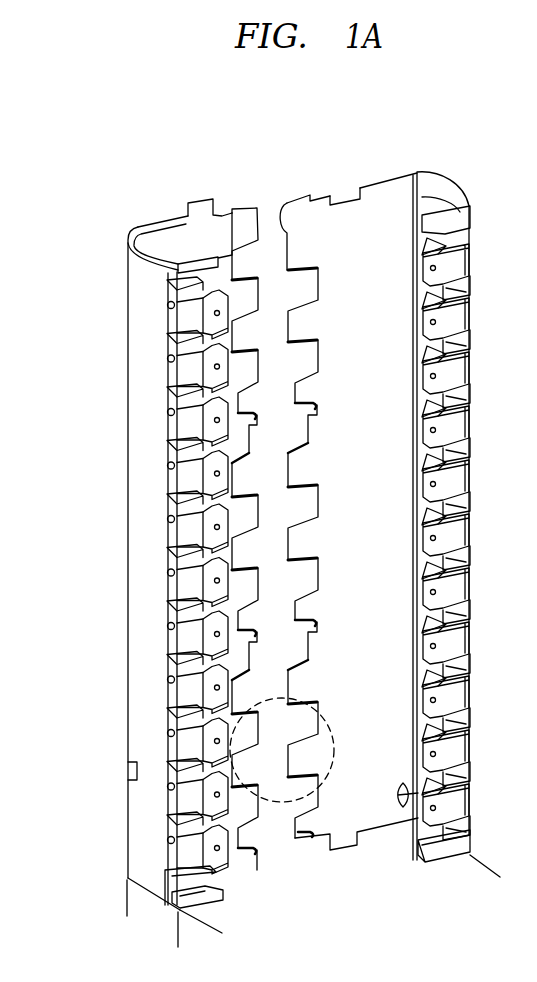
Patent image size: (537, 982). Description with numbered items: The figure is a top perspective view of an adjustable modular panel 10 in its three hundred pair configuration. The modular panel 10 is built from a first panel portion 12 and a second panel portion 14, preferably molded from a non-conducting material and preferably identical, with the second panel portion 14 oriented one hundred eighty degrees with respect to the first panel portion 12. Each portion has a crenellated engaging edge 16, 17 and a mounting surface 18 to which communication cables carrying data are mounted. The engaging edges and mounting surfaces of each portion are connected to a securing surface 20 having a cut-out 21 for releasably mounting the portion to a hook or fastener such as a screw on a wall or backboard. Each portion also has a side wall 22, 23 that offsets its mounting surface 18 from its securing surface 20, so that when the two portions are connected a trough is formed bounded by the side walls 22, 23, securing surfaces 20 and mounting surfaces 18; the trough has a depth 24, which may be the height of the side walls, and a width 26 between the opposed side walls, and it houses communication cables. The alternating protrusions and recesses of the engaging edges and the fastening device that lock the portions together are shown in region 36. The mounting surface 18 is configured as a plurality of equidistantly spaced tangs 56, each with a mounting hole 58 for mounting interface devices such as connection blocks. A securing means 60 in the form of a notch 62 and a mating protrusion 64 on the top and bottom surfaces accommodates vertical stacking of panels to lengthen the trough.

The adjustable modular panel 10 is at (104, 201).
The first panel portion 12 is at (161, 226).
The second panel portion 14 is at (383, 182).
The crenellated engaging edge 16 is at (256, 210).
The crenellated engaging edge 17 is at (284, 206).
The mounting surface 18 is at (196, 322).
The securing surface 20 is at (380, 366).
The cut-out 21 is at (410, 797).
The side wall 22 is at (163, 387).
The side wall 23 is at (428, 197).
The depth 24 is at (178, 938).
The width 26 is at (487, 874).
The region 36 is at (210, 720).
The tang 56 is at (452, 645).
The mounting hole 58 is at (214, 367).
The securing means 60 is at (219, 153).
The notch 62 is at (342, 199).
The mating protrusion 64 is at (200, 198).